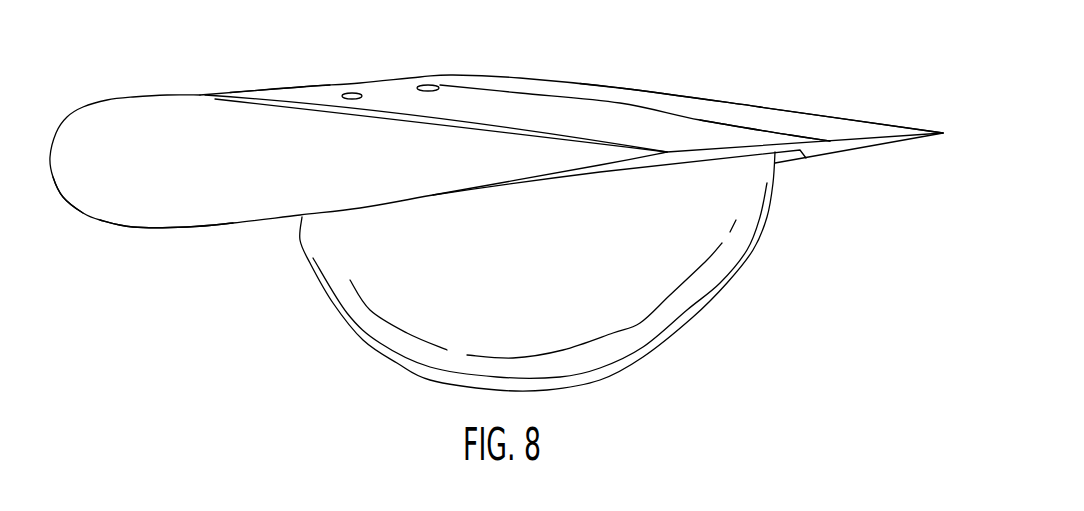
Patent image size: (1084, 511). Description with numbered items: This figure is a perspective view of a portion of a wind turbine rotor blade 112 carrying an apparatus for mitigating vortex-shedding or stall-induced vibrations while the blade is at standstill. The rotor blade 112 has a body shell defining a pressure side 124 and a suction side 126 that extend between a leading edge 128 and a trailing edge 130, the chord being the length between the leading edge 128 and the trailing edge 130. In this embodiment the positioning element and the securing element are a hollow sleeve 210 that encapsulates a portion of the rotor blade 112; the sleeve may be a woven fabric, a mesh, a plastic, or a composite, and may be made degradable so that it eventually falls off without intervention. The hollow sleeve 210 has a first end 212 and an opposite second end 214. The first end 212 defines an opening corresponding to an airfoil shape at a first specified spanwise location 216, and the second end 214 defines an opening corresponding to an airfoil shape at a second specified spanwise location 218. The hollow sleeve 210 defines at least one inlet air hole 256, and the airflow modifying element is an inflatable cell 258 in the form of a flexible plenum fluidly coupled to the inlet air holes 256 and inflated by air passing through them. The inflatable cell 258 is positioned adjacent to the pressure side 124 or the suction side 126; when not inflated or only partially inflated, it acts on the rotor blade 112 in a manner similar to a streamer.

The rotor blade 112 is at (130, 125).
The pressure side 124 is at (190, 232).
The suction side 126 is at (622, 99).
The leading edge 128 is at (64, 215).
The trailing edge 130 is at (952, 122).
The hollow sleeve 210 is at (395, 94).
The first end 212 is at (814, 164).
The second end 214 is at (270, 76).
The first specified spanwise location 216 is at (780, 120).
The second specified spanwise location 218 is at (238, 82).
The inlet air hole 256 is at (350, 92).
The inflatable cell 258 is at (708, 318).